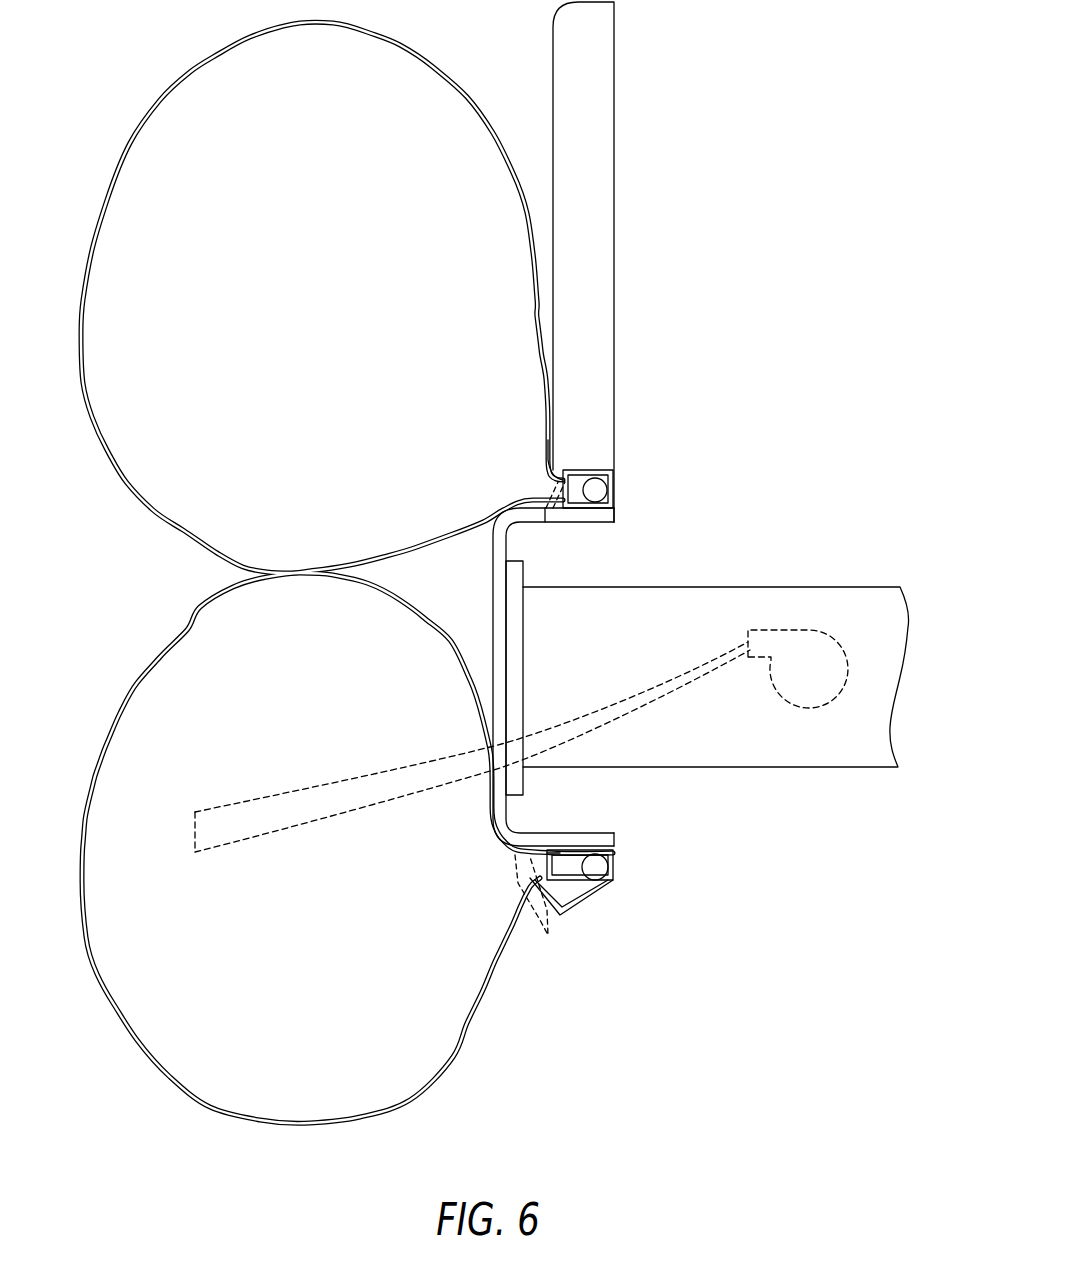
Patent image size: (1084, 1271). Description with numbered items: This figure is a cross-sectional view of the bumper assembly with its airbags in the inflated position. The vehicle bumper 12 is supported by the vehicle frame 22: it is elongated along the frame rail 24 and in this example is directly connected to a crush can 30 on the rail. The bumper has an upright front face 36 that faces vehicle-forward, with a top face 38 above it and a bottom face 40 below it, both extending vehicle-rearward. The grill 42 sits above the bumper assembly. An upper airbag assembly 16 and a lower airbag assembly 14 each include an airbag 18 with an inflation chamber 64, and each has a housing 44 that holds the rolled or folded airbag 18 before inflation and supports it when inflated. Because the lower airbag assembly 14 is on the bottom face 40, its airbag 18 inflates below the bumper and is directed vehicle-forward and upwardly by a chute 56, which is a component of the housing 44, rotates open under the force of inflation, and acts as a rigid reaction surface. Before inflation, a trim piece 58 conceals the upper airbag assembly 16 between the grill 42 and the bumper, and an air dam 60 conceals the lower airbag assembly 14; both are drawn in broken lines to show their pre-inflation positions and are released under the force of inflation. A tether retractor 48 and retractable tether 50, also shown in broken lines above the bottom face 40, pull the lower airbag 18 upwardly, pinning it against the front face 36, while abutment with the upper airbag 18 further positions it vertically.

The vehicle bumper 12 is at (593, 522).
The lower airbag assembly 14 is at (611, 910).
The upper airbag assembly 16 is at (642, 492).
The airbag 18 is at (200, 63).
The vehicle frame 22 is at (719, 628).
The frame rail 24 is at (865, 605).
The crush can 30 is at (760, 578).
The front face 36 is at (386, 677).
The top face 38 is at (574, 489).
The bottom face 40 is at (562, 913).
The grill 42 is at (600, 147).
The housing 44 is at (617, 480).
The tether retractor 48 is at (808, 709).
The retractable tether 50 is at (638, 703).
The chute 56 is at (566, 868).
The trim piece 58 is at (553, 483).
The air dam 60 is at (548, 937).
The inflation chamber 64 is at (340, 580).